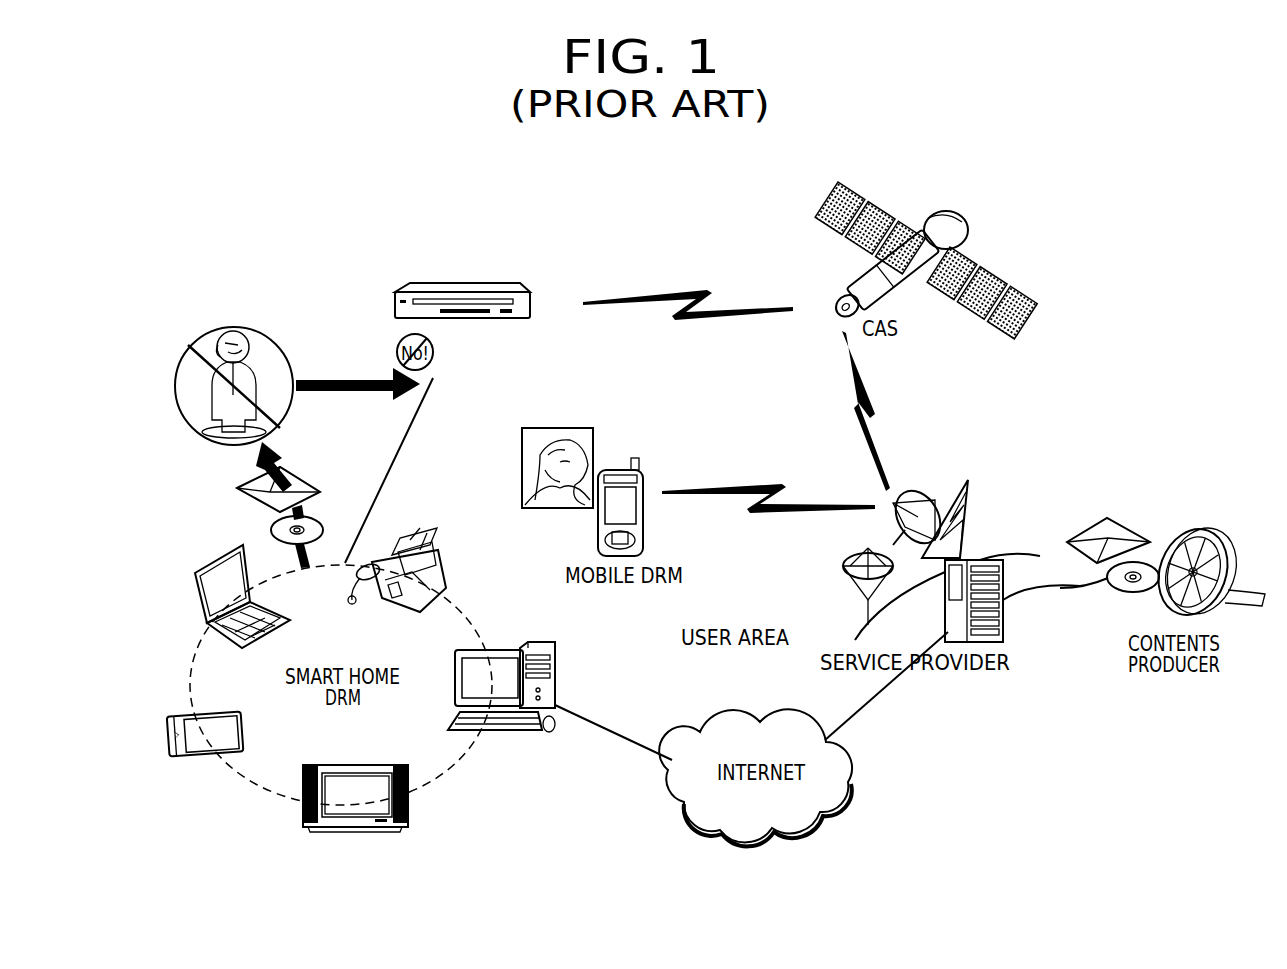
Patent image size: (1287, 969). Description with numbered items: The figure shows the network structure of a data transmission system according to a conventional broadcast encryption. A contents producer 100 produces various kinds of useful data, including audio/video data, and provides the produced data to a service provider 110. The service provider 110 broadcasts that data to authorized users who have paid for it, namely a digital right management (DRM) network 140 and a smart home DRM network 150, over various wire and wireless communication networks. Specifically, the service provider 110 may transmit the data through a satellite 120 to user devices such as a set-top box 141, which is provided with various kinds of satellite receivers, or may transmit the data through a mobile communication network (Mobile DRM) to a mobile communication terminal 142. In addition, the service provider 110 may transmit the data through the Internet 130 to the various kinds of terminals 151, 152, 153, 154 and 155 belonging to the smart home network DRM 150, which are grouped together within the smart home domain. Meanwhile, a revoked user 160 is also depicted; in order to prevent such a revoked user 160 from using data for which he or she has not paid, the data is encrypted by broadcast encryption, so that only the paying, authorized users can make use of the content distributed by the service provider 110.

The contents producer 100 is at (1195, 527).
The service provider 110 is at (968, 502).
The satellite 120 is at (965, 226).
The Internet 130 is at (830, 803).
The digital right management (DRM) network 140 is at (558, 428).
The set-top box 141 is at (460, 283).
The mobile communication terminal 142 is at (640, 466).
The smart home DRM network 150 is at (450, 772).
The terminal 151 is at (512, 730).
The terminal 152 is at (435, 548).
The terminal 153 is at (197, 602).
The terminal 154 is at (168, 726).
The terminal 155 is at (356, 830).
The revoked user 160 is at (177, 380).